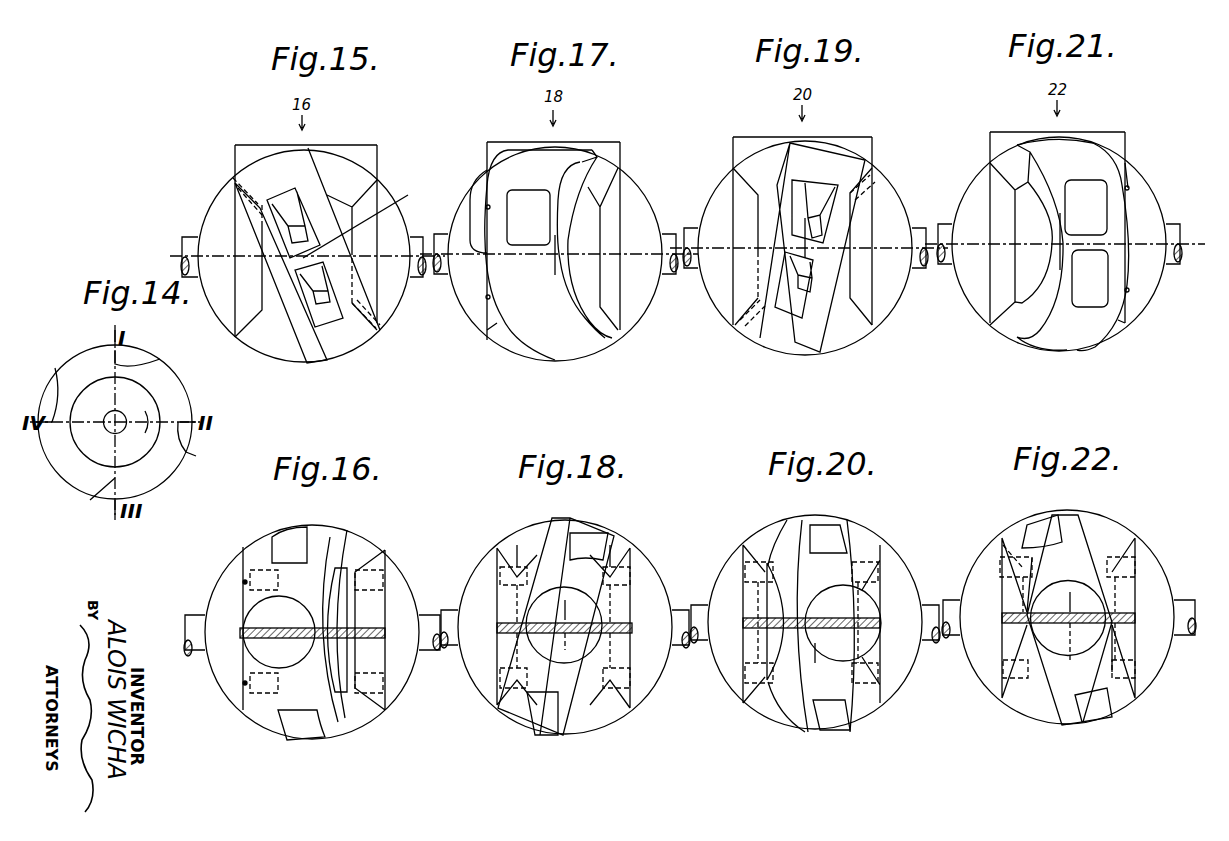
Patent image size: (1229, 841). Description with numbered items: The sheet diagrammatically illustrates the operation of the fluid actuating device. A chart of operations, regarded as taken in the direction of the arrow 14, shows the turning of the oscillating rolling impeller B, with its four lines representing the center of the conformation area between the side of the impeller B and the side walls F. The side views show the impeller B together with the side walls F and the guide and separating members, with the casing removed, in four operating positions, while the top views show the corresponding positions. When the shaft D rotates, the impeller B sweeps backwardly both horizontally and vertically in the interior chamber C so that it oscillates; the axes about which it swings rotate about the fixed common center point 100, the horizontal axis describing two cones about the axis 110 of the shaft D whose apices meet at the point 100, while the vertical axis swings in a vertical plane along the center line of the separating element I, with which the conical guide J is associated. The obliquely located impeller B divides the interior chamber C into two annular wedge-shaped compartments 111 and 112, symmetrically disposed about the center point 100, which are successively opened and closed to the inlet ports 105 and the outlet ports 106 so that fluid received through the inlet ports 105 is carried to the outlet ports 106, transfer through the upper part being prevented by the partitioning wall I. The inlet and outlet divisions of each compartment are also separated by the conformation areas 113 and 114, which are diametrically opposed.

In FIG. 15, the arrow 14 is at (163, 260).
In FIG. 15, the fixed common center point 100 is at (372, 220).
In FIG. 17, the fixed common center point 100 is at (555, 256).
In FIG. 19, the fixed common center point 100 is at (803, 260).
In FIG. 21, the fixed common center point 100 is at (1062, 247).
In FIG. 16, the fixed common center point 100 is at (315, 653).
In FIG. 18, the fixed common center point 100 is at (565, 650).
In FIG. 20, the fixed common center point 100 is at (815, 657).
In FIG. 22, the fixed common center point 100 is at (1062, 605).
In FIG. 16, the inlet ports 105 is at (252, 695).
In FIG. 18, the inlet ports 105 is at (593, 693).
In FIG. 20, the inlet ports 105 is at (765, 690).
In FIG. 22, the inlet ports 105 is at (1027, 610).
In FIG. 16, the outlet ports 106 is at (357, 572).
In FIG. 18, the outlet ports 106 is at (518, 568).
In FIG. 20, the outlet ports 106 is at (758, 570).
In FIG. 22, the outlet ports 106 is at (1025, 557).
In FIG. 15, the axis of the shaft 110 is at (400, 262).
In FIG. 17, the axis of the shaft 110 is at (640, 245).
In FIG. 19, the axis of the shaft 110 is at (679, 191).
In FIG. 15, the annular wedge-shaped compartment 111 is at (258, 332).
In FIG. 19, the annular wedge-shaped compartment 111 is at (762, 152).
In FIG. 18, the annular wedge-shaped compartment 111 is at (522, 538).
In FIG. 22, the annular wedge-shaped compartment 111 is at (1040, 702).
In FIG. 15, the annular wedge-shaped compartment 112 is at (345, 173).
In FIG. 19, the annular wedge-shaped compartment 112 is at (850, 332).
In FIG. 18, the annular wedge-shaped compartment 112 is at (607, 712).
In FIG. 22, the annular wedge-shaped compartment 112 is at (1115, 538).
In FIG. 14, the conformation area 113 is at (160, 359).
In FIG. 15, the conformation area 113 is at (233, 178).
In FIG. 17, the conformation area 113 is at (487, 186).
In FIG. 19, the conformation area 113 is at (740, 320).
In FIG. 16, the conformation area 113 is at (242, 633).
In FIG. 18, the conformation area 113 is at (505, 695).
In FIG. 22, the conformation area 113 is at (1008, 558).
In FIG. 15, the conformation area 114 is at (378, 330).
In FIG. 19, the conformation area 114 is at (870, 182).
In FIG. 21, the conformation area 114 is at (1132, 243).
In FIG. 18, the conformation area 114 is at (632, 572).
In FIG. 20, the conformation area 114 is at (880, 623).
In FIG. 22, the conformation area 114 is at (940, 575).
In FIG. 15, the oscillating rolling impeller B is at (308, 150).
In FIG. 17, the oscillating rolling impeller B is at (530, 350).
In FIG. 19, the oscillating rolling impeller B is at (758, 330).
In FIG. 21, the oscillating rolling impeller B is at (1039, 342).
In FIG. 16, the oscillating rolling impeller B is at (310, 546).
In FIG. 18, the oscillating rolling impeller B is at (573, 535).
In FIG. 20, the oscillating rolling impeller B is at (845, 530).
In FIG. 22, the oscillating rolling impeller B is at (1008, 538).
In FIG. 15, the interior chamber C is at (276, 366).
In FIG. 15, the shaft D is at (182, 237).
In FIG. 16, the shaft D is at (188, 625).
In FIG. 22, the shaft D is at (1185, 605).
In FIG. 15, the side wall members F is at (219, 297).
In FIG. 17, the side wall members F is at (477, 310).
In FIG. 19, the side wall members F is at (719, 307).
In FIG. 21, the side wall members F is at (984, 302).
In FIG. 18, the side wall members F is at (487, 665).
In FIG. 20, the side wall members F is at (735, 677).
In FIG. 22, the side wall members F is at (1155, 672).
In FIG. 15, the partitioning member or wall I is at (362, 148).
In FIG. 17, the partitioning member or wall I is at (612, 148).
In FIG. 19, the partitioning member or wall I is at (868, 138).
In FIG. 21, the partitioning member or wall I is at (1125, 140).
In FIG. 16, the partitioning member or wall I is at (377, 625).
In FIG. 18, the partitioning member or wall I is at (640, 620).
In FIG. 20, the partitioning member or wall I is at (844, 627).
In FIG. 22, the partitioning member or wall I is at (1027, 625).
In FIG. 16, the conical guide J is at (255, 607).
In FIG. 18, the conical guide J is at (578, 596).
In FIG. 20, the conical guide J is at (833, 596).
In FIG. 22, the conical guide J is at (1072, 588).